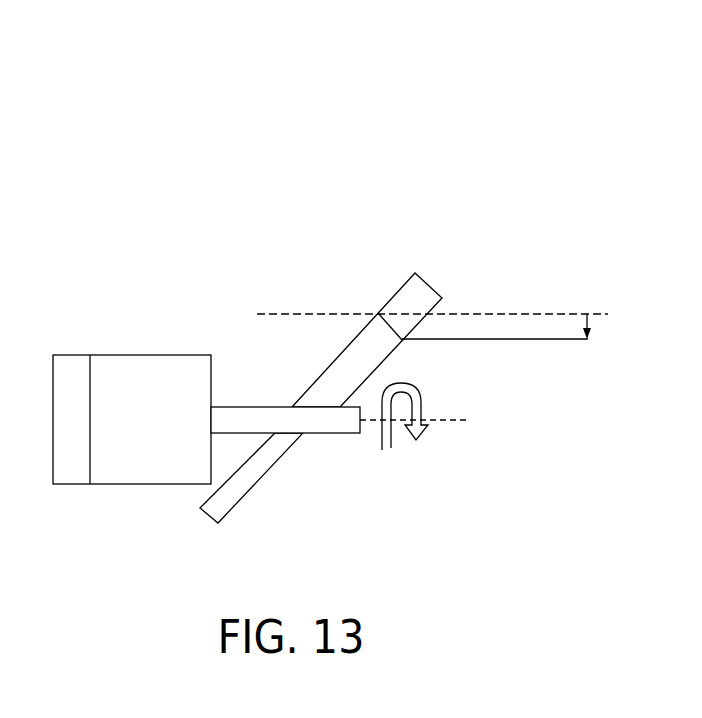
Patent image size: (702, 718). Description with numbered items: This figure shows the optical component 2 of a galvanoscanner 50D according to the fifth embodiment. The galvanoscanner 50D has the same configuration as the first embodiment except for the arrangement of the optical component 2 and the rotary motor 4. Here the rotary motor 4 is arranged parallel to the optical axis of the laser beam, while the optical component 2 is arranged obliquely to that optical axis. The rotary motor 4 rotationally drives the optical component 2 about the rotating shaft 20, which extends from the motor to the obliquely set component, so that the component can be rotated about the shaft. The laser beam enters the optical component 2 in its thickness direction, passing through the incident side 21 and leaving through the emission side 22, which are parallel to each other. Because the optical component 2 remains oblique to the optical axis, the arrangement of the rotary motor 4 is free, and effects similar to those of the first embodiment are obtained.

The galvanoscanner 50D is at (300, 100).
The rotary motor 4 is at (151, 362).
The rotating shaft 20 is at (343, 428).
The optical component 2 is at (360, 373).
The incident side 21 is at (341, 329).
The emission side 22 is at (400, 357).